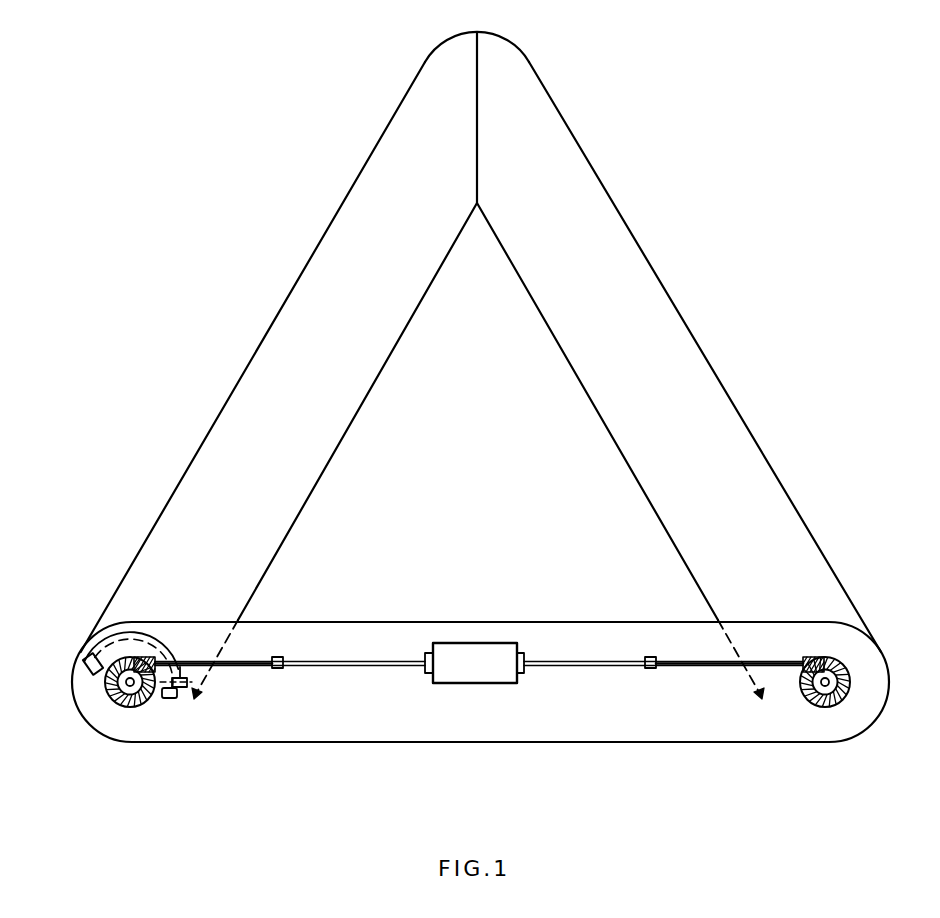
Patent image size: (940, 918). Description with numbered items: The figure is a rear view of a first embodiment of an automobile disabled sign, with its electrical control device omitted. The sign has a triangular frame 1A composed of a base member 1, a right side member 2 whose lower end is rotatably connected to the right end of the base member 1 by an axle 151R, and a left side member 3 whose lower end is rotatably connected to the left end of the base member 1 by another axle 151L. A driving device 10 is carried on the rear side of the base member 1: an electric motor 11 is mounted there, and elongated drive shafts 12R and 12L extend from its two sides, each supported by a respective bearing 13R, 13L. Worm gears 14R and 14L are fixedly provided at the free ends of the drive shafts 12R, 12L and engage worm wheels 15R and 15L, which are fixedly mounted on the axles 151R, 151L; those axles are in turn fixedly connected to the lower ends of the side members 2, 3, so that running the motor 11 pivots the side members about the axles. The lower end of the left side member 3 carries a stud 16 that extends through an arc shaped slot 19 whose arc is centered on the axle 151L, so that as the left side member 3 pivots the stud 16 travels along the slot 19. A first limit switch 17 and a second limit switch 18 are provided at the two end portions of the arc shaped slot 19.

The triangular frame 1A is at (610, 163).
The base member 1 is at (667, 728).
The right side member 2 is at (704, 373).
The left side member 3 is at (249, 373).
The driving device 10 is at (532, 648).
The electric motor 11 is at (453, 682).
The left drive shaft 12L is at (318, 668).
The right drive shaft 12R is at (600, 668).
The left bearing 13L is at (279, 657).
The right bearing 13R is at (652, 657).
The left worm gear 14L is at (135, 657).
The right worm gear 14R is at (815, 657).
The left worm wheel 15L is at (133, 692).
The right worm wheel 15R is at (841, 690).
The left axle 151L is at (116, 703).
The right axle 151R is at (829, 708).
The stud 16 is at (186, 690).
The first limit switch 17 is at (86, 668).
The second limit switch 18 is at (170, 699).
The arc shaped slot 19 is at (111, 638).